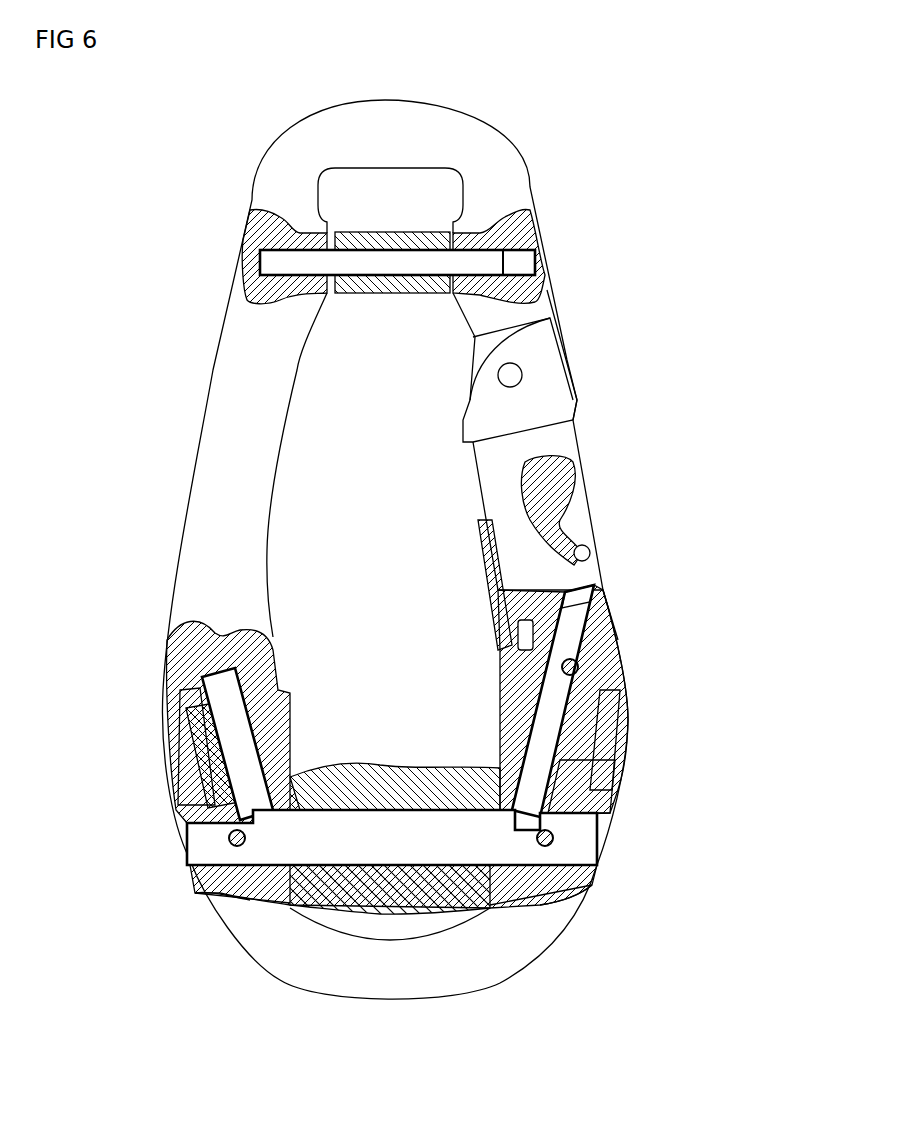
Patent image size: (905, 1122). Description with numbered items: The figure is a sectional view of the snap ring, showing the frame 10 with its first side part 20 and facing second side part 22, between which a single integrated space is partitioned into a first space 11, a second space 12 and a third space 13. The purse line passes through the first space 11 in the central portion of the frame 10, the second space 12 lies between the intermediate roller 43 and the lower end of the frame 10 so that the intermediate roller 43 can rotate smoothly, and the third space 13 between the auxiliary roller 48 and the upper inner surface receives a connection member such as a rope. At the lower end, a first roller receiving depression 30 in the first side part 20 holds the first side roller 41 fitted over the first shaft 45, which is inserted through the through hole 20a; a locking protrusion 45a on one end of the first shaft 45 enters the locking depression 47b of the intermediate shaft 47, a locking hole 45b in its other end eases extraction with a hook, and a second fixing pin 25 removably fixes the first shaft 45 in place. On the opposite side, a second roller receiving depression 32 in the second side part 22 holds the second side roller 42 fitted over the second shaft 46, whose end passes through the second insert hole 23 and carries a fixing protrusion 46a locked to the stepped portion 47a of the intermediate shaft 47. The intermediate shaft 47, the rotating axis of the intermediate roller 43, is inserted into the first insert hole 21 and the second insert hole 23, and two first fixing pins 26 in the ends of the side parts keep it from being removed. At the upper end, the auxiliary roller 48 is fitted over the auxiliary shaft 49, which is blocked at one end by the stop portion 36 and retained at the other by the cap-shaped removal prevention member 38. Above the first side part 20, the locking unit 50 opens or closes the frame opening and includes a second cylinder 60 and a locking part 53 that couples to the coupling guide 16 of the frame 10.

The frame 10 is at (212, 456).
The first space 11 is at (323, 554).
The second space 12 is at (407, 924).
The third space 13 is at (402, 181).
The coupling guide 16 is at (533, 600).
The first side part 20 is at (625, 685).
The through hole 20a is at (620, 650).
The first insert hole 21 is at (600, 830).
The second side part 22 is at (170, 650).
The second insert hole 23 is at (222, 818).
The second fixing pin 25 is at (580, 665).
The first fixing pins 26 is at (197, 880).
The first roller receiving depression 30 is at (612, 790).
The second roller receiving depression 32 is at (200, 785).
The stop portion 36 is at (250, 222).
The removal prevention member 38 is at (530, 262).
The first side roller 41 is at (613, 750).
The second side roller 42 is at (200, 700).
The intermediate roller 43 is at (455, 880).
The first shaft 45 is at (548, 713).
The locking protrusion 45a is at (548, 848).
The locking hole 45b is at (610, 600).
The second shaft 46 is at (210, 750).
The fixing protrusion 46a is at (228, 840).
The intermediate shaft 47 is at (365, 848).
The stepped portion 47a is at (260, 880).
The locking depression 47b is at (560, 880).
The auxiliary roller 48 is at (385, 295).
The auxiliary shaft 49 is at (378, 246).
The locking unit 50 is at (590, 461).
The locking part 53 is at (512, 640).
The second cylinder 60 is at (575, 540).